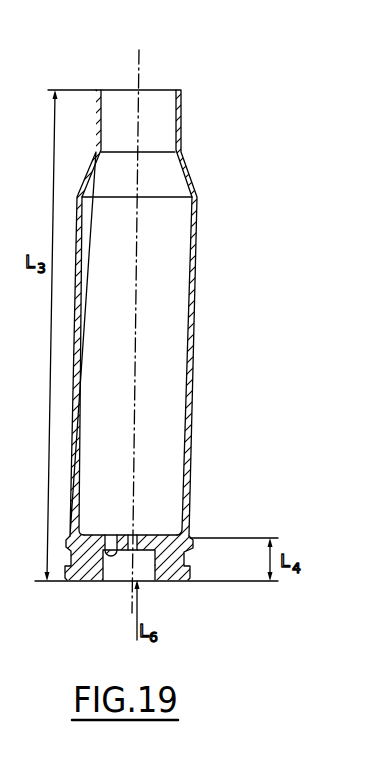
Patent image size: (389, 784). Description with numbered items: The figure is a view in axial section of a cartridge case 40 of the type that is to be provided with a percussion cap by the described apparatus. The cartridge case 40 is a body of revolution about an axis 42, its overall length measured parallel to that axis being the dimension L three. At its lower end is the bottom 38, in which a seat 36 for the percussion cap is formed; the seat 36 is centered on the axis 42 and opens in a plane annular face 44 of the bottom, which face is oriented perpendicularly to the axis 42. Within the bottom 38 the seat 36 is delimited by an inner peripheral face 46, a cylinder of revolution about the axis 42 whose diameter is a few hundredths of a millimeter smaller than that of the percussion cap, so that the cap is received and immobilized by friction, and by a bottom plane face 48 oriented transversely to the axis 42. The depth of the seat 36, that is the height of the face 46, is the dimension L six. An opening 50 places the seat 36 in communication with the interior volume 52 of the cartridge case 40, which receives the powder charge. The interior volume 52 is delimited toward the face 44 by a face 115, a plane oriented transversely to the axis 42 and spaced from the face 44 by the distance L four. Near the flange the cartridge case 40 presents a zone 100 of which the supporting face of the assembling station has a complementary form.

The seat 36 is at (116, 575).
The bottom 38 is at (189, 548).
The cartridge case 40 is at (73, 375).
The axis 42 is at (139, 64).
The plane annular face 44 is at (80, 583).
The inner peripheral face 46 is at (146, 583).
The bottom plane face 48 is at (113, 538).
The opening 50 is at (137, 535).
The interior volume 52 is at (179, 355).
The zone 100 is at (186, 168).
The face 115 is at (156, 537).